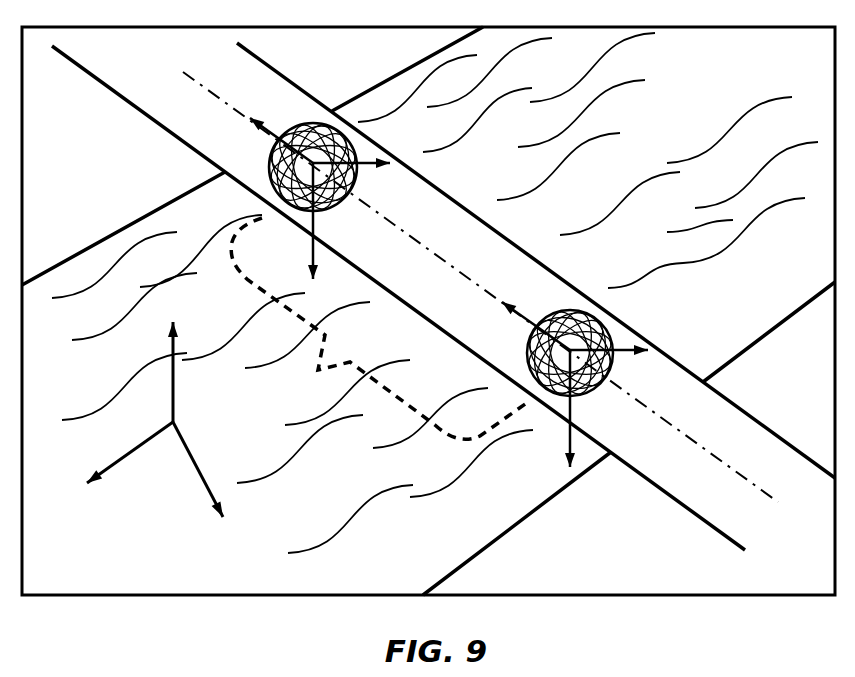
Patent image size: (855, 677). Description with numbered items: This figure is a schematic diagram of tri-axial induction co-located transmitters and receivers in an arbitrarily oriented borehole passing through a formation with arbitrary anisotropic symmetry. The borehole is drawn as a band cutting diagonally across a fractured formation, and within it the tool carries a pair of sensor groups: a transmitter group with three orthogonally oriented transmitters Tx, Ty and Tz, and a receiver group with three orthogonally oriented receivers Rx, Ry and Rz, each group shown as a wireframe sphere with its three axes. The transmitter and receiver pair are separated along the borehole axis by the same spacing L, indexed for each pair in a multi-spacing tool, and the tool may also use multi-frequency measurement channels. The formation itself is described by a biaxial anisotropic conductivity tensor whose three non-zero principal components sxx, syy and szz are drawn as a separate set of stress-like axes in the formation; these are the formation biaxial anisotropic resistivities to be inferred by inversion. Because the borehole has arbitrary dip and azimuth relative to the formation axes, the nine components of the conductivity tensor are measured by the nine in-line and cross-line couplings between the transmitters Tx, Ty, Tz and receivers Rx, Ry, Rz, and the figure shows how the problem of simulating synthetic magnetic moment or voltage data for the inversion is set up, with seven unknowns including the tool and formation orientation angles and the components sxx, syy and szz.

The transmitter Tx is at (360, 176).
The transmitter Ty is at (326, 229).
The transmitter Tz is at (280, 126).
The receiver Rx is at (620, 363).
The receiver Ry is at (556, 416).
The receiver Rz is at (531, 312).
The formation biaxial anisotropic resistivity component szz is at (173, 356).
The formation biaxial anisotropic resistivity component syy is at (117, 464).
The formation biaxial anisotropic resistivity component sxx is at (212, 483).
The spacing L is at (379, 328).